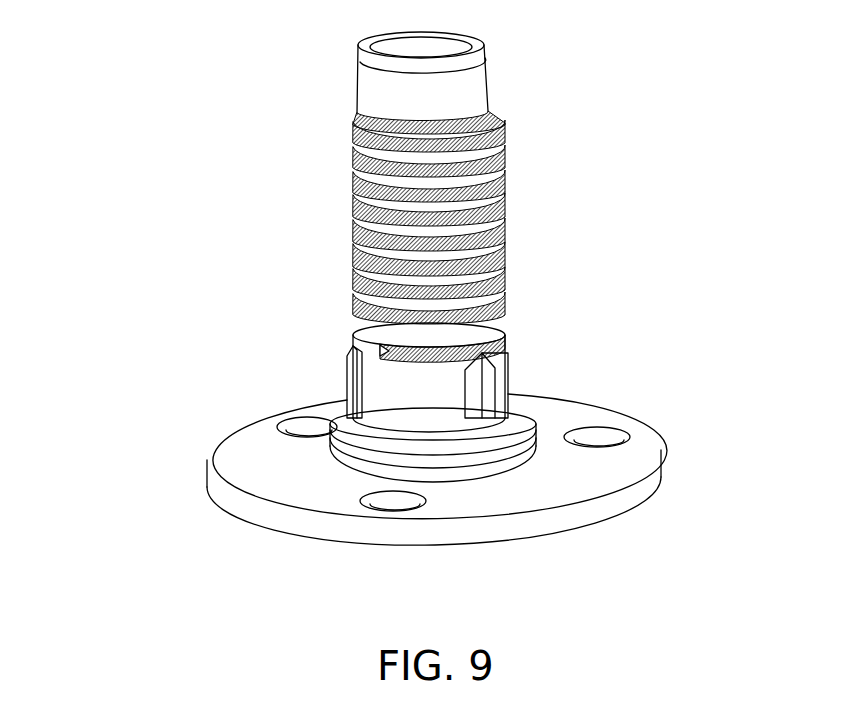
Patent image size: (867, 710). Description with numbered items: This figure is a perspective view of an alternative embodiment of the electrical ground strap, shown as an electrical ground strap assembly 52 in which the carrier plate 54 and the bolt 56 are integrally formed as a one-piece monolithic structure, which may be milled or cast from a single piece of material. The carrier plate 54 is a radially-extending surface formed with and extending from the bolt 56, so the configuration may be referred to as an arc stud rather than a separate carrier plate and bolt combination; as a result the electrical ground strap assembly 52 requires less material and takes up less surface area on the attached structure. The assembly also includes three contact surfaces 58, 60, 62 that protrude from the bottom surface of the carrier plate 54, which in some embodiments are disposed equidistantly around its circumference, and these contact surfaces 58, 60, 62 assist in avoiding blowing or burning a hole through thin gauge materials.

The electrical ground strap assembly 52 is at (205, 401).
The carrier plate 54 is at (563, 417).
The bolt 56 is at (487, 86).
The contact surface 58 is at (308, 421).
The contact surface 60 is at (382, 502).
The contact surface 62 is at (627, 437).